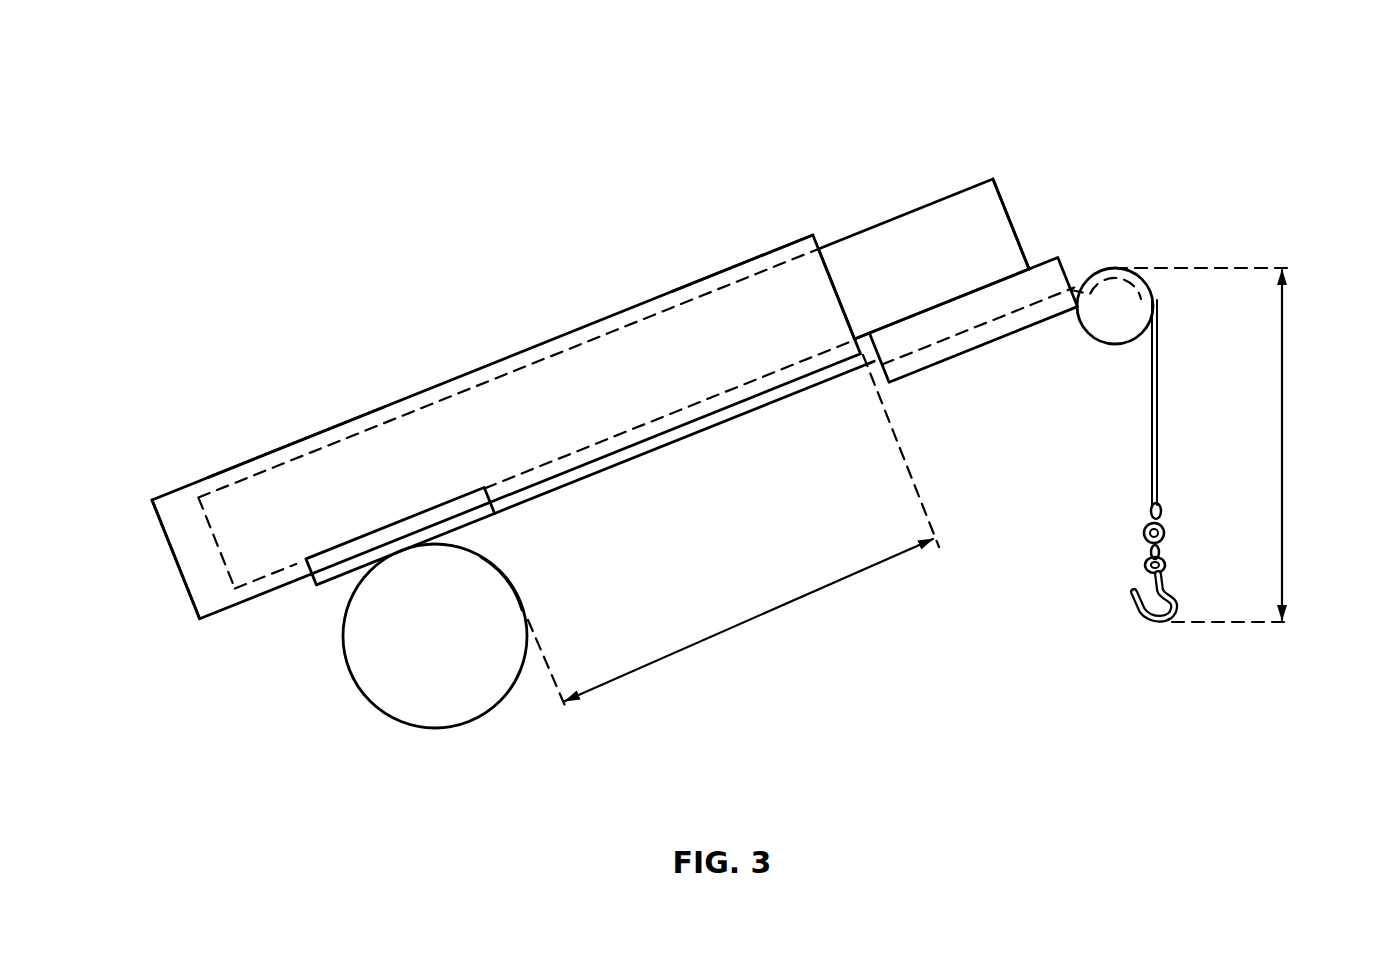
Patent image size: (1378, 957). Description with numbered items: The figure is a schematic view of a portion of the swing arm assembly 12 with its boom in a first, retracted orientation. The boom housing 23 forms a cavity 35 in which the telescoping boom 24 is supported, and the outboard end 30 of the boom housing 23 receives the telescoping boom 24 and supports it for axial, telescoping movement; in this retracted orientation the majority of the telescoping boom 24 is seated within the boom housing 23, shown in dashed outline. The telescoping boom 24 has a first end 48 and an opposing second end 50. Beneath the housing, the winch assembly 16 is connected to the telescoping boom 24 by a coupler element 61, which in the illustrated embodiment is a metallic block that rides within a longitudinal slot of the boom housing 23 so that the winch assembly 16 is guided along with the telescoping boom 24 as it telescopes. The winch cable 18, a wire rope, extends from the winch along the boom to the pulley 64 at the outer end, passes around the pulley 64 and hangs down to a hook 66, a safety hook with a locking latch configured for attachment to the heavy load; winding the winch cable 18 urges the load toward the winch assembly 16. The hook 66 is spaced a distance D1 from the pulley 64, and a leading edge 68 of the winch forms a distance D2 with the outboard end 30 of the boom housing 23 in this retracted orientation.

The swing arm assembly 12 is at (1265, 76).
The winch assembly 16 is at (367, 698).
The winch cable 18 is at (695, 436).
The boom housing 23 is at (420, 392).
The telescoping boom 24 is at (932, 205).
The outboard end 30 is at (785, 245).
The cavity 35 is at (180, 504).
The first end 48 is at (293, 458).
The second end 50 is at (978, 183).
The coupler element 61 is at (337, 582).
The pulley 64 is at (1118, 268).
The hook 66 is at (1131, 588).
The leading edge 68 is at (513, 573).
The distance D1 is at (1283, 413).
The distance D2 is at (770, 615).